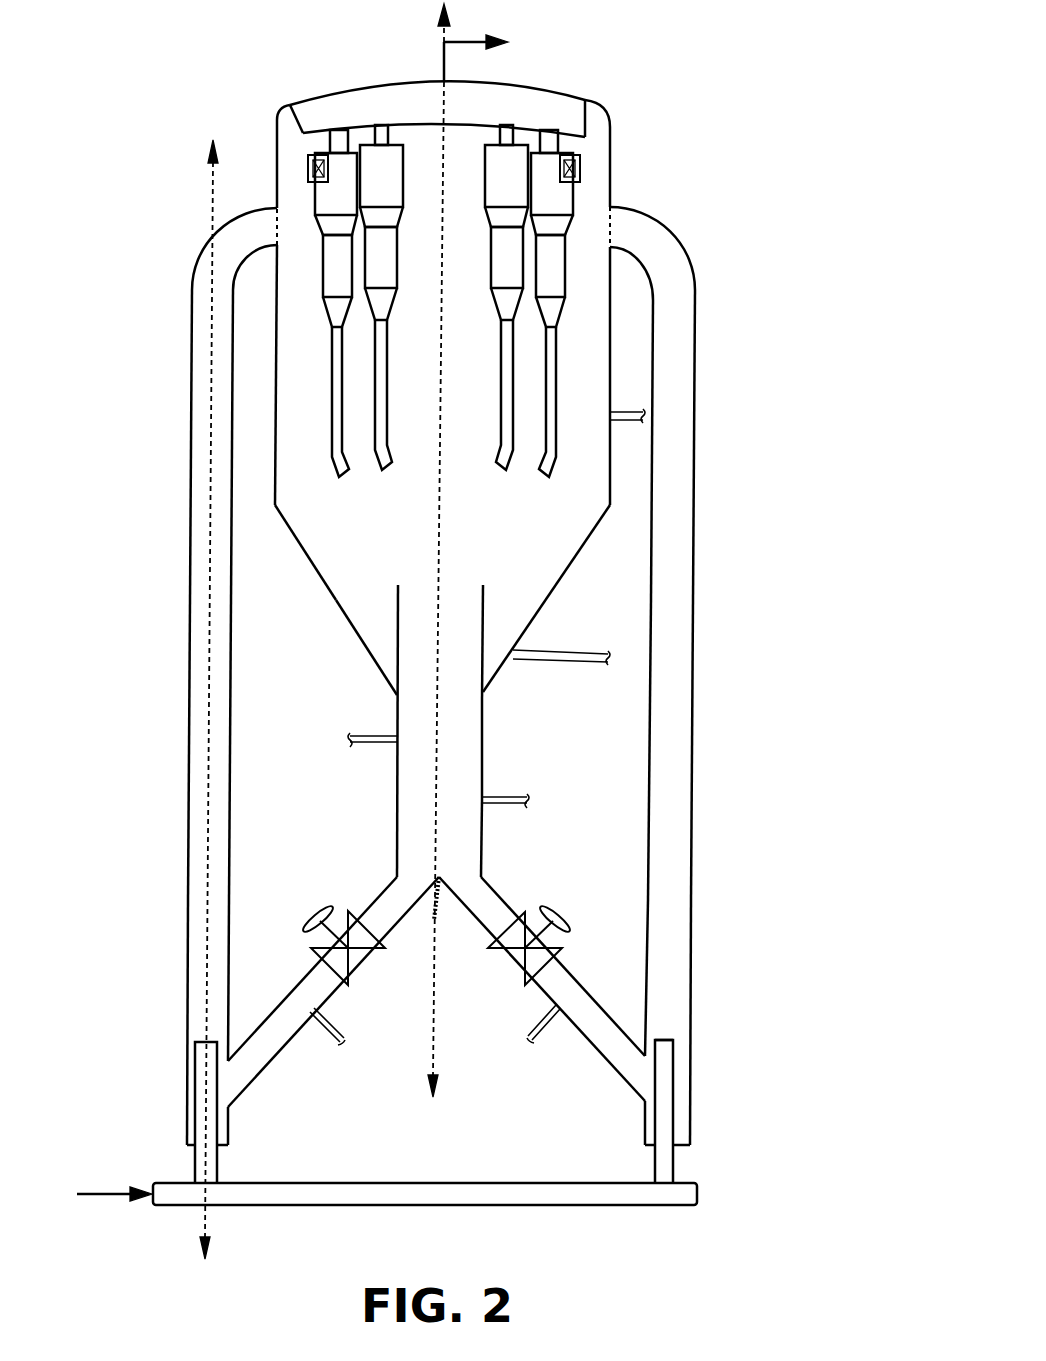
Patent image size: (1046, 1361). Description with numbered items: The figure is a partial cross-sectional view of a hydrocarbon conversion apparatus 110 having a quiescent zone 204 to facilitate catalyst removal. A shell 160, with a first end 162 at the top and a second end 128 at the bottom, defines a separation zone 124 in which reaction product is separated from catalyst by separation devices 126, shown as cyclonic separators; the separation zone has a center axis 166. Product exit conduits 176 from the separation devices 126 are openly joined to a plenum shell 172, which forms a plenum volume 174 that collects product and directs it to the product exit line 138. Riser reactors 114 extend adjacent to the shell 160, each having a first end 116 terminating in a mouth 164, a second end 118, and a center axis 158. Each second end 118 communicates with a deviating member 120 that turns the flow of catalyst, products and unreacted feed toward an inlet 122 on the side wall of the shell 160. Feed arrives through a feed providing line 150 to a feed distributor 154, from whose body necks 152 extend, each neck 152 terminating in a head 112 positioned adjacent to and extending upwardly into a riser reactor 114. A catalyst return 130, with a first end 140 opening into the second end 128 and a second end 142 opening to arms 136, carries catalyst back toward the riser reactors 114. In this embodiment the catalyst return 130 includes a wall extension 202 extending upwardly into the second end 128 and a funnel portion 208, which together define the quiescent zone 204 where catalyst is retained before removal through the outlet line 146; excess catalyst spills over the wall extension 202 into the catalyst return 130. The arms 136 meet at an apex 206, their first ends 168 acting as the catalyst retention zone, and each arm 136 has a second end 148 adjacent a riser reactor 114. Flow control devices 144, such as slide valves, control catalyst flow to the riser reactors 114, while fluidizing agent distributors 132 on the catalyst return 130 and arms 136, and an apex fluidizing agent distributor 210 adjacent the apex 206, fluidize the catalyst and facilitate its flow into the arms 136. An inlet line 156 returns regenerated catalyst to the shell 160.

The hydrocarbon conversion apparatus 110 is at (683, 72).
The head 112 is at (674, 1042).
The riser reactor 114 is at (695, 692).
The first end of riser reactor 116 is at (693, 990).
The second end of riser reactor 118 is at (696, 318).
The deviating member 120 is at (675, 220).
The inlet 122 is at (612, 226).
The separation zone 124 is at (400, 366).
The separation device 126 is at (580, 168).
The second end of shell 128 is at (537, 613).
The catalyst return 130 is at (397, 780).
The fluidizing agent distributor 132 is at (521, 797).
The arm 136 is at (603, 1053).
The product exit line 138 is at (447, 62).
The first end of catalyst return 140 is at (483, 717).
The second end of catalyst return 142 is at (482, 863).
The flow control device 144 is at (522, 957).
The outlet line 146 is at (553, 660).
The second end of arm 148 is at (641, 1090).
The feed providing line 150 is at (97, 1195).
The neck 152 is at (692, 1120).
The feed distributor 154 is at (482, 1205).
The inlet line 156 is at (633, 410).
The center axis of riser reactor 158 is at (190, 990).
The shell 160 is at (277, 163).
The first end of shell 162 is at (612, 125).
The mouth 164 is at (674, 1082).
The center axis of separation zone 166 is at (437, 645).
The first end of arm 168 is at (493, 900).
The plenum shell 172 is at (300, 116).
The plenum volume 174 is at (385, 113).
The product exit conduit 176 is at (540, 106).
The wall extension 202 is at (487, 612).
The quiescent zone 204 is at (382, 605).
The apex 206 is at (433, 873).
The funnel portion 208 is at (373, 660).
The apex fluidizing agent distributor 210 is at (437, 920).